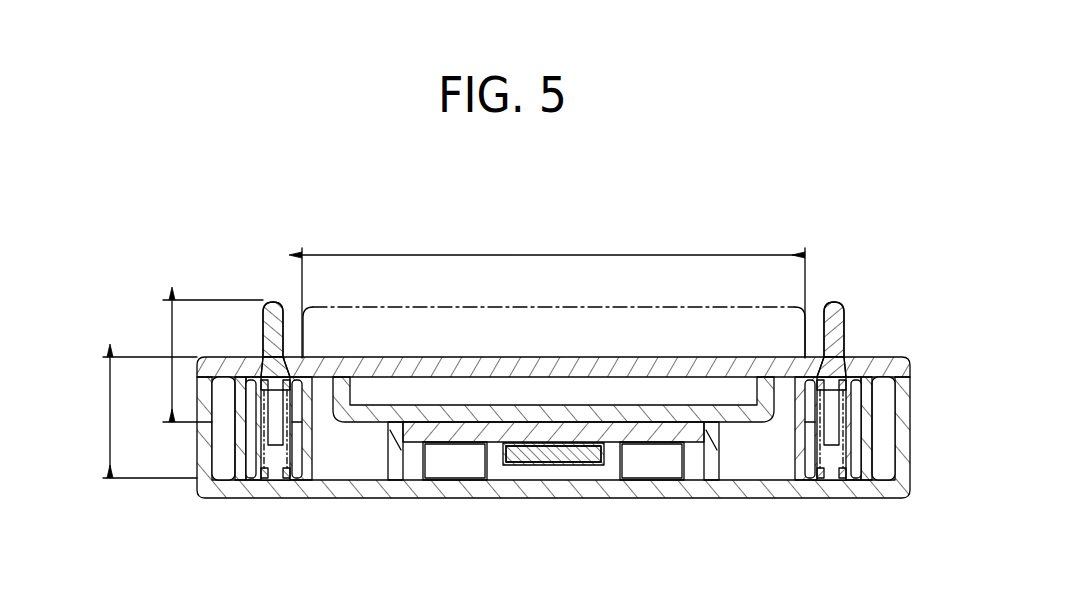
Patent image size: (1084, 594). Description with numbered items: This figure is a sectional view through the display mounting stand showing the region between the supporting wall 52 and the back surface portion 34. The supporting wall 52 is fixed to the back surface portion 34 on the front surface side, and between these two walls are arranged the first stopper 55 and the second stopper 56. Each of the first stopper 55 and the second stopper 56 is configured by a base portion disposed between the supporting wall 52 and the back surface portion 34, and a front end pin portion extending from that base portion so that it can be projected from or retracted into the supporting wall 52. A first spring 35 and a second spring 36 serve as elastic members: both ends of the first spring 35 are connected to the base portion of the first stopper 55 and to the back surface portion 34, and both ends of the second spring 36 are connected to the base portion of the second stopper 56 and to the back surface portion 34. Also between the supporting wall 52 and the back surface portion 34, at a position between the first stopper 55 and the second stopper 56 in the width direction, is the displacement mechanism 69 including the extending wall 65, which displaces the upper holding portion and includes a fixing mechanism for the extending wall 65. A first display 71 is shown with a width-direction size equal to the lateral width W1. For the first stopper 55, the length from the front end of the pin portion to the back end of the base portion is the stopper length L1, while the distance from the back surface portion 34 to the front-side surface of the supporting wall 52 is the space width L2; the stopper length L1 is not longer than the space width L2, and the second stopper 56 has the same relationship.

The back surface portion 34 is at (473, 490).
The first spring 35 is at (218, 462).
The second spring 36 is at (850, 462).
The supporting wall 52 is at (410, 358).
The first stopper 55 is at (275, 300).
The second stopper 56 is at (832, 302).
The extending wall 65 is at (655, 405).
The displacement mechanism 69 is at (645, 450).
The first display 71 is at (585, 305).
The lateral width W1 is at (565, 255).
The stopper length L1 is at (170, 332).
The space width L2 is at (110, 418).